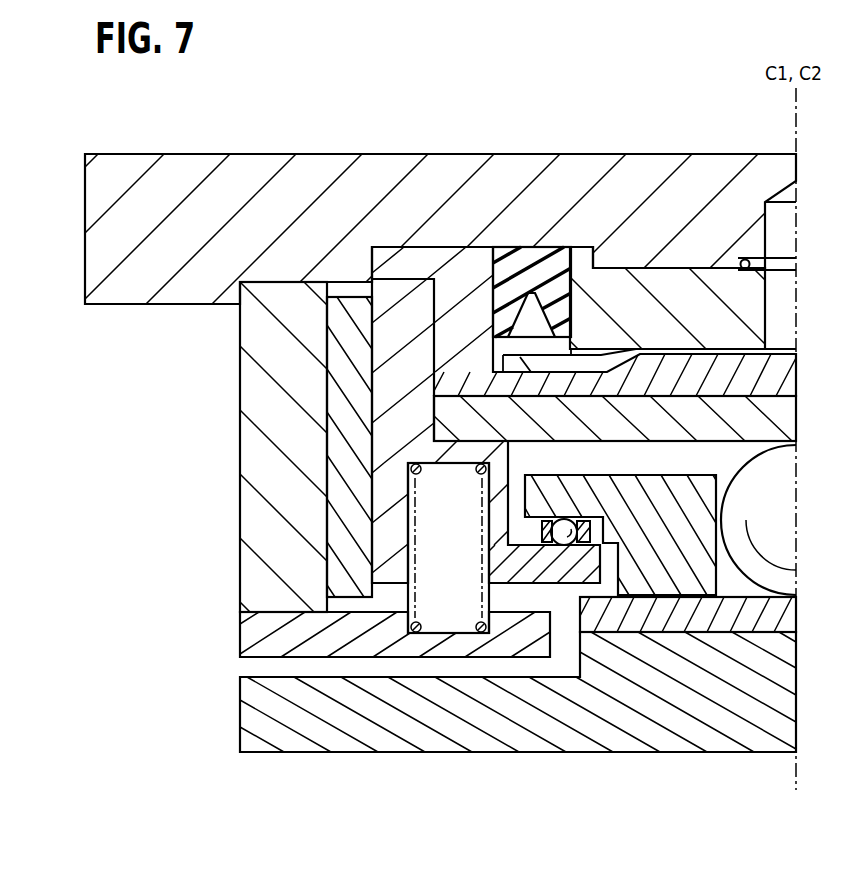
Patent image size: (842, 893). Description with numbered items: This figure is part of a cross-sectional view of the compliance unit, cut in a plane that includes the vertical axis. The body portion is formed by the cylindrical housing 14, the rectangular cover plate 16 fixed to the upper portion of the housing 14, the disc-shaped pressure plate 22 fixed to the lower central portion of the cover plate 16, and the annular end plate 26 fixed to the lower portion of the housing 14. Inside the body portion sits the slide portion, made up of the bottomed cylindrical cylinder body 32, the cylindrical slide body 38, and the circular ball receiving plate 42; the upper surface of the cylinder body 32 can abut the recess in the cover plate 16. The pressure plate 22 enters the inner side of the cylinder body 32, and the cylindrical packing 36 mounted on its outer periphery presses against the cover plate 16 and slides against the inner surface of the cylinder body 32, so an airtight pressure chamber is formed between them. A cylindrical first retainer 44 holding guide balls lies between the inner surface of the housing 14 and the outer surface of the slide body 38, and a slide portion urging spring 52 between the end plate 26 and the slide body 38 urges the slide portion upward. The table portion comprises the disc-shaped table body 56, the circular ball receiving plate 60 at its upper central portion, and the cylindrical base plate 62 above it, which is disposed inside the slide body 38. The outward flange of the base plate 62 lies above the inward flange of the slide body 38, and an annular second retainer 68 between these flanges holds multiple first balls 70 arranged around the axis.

The cover plate 16 is at (258, 178).
The housing 14 is at (262, 378).
The first retainer 44 is at (343, 438).
The cylinder body 32 is at (460, 300).
The slide body 38 is at (403, 310).
The packing 36 is at (523, 270).
The pressure plate 22 is at (672, 288).
The ball receiving plate 42 is at (627, 432).
The base plate 62 is at (603, 492).
The slide portion urging spring 52 is at (476, 470).
The second retainer 68 is at (547, 542).
The first ball 70 is at (562, 538).
The end plate 26 is at (252, 638).
The table body 56 is at (416, 730).
The ball receiving plate 60 is at (661, 620).